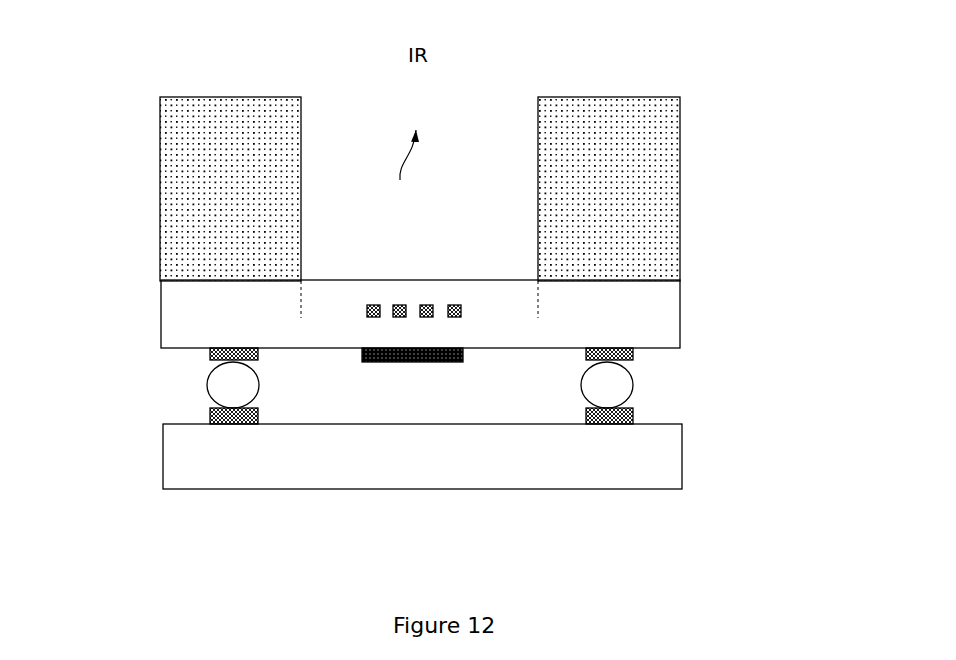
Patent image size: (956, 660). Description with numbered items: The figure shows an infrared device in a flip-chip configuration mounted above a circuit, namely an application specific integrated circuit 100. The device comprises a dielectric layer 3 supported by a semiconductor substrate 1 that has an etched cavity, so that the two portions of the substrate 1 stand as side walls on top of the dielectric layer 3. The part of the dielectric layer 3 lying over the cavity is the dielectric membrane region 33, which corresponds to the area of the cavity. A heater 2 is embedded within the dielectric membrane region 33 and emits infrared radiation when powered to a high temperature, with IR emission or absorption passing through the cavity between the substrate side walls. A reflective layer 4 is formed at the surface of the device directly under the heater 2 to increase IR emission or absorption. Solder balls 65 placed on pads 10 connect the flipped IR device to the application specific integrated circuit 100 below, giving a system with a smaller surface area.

The semiconductor substrate 1 is at (648, 177).
The dielectric layer 3 is at (658, 308).
The dielectric membrane region 33 is at (536, 293).
The heater 2 is at (368, 322).
The reflective layer 4 is at (467, 361).
The pads 10 is at (640, 354).
The solder balls 65 is at (642, 388).
The application specific integrated circuit 100 is at (688, 460).